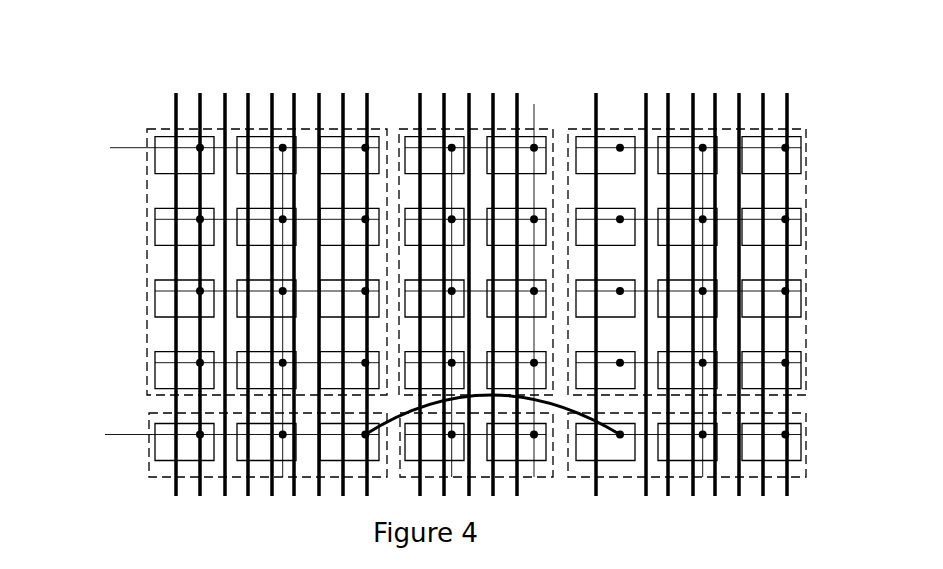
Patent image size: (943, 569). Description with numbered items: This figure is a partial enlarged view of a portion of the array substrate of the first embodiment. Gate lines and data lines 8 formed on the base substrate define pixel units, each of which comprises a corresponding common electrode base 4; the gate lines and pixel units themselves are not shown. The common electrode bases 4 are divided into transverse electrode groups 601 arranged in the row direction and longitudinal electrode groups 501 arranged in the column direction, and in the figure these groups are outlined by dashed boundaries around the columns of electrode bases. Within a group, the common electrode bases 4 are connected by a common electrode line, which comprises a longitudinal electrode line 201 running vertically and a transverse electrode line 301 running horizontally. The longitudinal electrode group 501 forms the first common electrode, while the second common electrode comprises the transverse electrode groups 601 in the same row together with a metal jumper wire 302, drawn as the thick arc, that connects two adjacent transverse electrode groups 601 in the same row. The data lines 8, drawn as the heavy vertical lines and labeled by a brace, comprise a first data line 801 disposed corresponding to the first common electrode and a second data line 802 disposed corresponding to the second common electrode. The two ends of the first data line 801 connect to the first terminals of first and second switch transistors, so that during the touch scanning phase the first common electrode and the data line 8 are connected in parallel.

The data line 8 is at (423, 52).
The first data line 801 is at (468, 91).
The second data line 802 is at (365, 94).
The longitudinal electrode line 201 is at (534, 104).
The transverse electrode line 301 is at (110, 150).
The metal jumper wire 302 is at (386, 413).
The longitudinal electrode group 501 is at (553, 137).
The transverse electrode group 601 is at (150, 228).
The common electrode base 4 is at (150, 296).